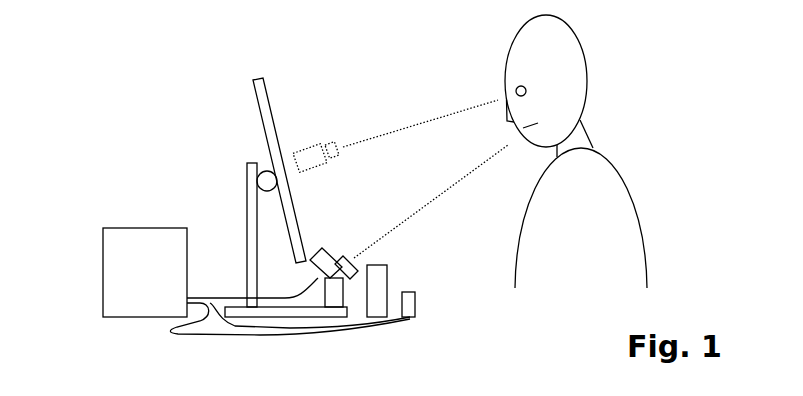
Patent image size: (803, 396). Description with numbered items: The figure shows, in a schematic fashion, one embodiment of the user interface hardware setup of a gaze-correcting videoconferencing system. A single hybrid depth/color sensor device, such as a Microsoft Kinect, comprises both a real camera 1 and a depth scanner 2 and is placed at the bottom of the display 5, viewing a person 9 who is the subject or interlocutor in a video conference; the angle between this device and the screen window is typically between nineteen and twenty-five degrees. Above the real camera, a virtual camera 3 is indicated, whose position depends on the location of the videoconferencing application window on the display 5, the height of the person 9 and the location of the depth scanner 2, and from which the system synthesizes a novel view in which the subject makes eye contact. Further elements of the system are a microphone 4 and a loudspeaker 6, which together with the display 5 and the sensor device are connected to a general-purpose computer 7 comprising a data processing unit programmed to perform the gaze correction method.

The real camera 1 is at (353, 257).
The depth scanner 2 is at (321, 249).
The virtual camera 3 is at (310, 146).
The microphone 4 is at (417, 306).
The display 5 is at (269, 89).
The loudspeaker 6 is at (390, 265).
The general-purpose computer 7 is at (108, 230).
The person 9 is at (468, 58).